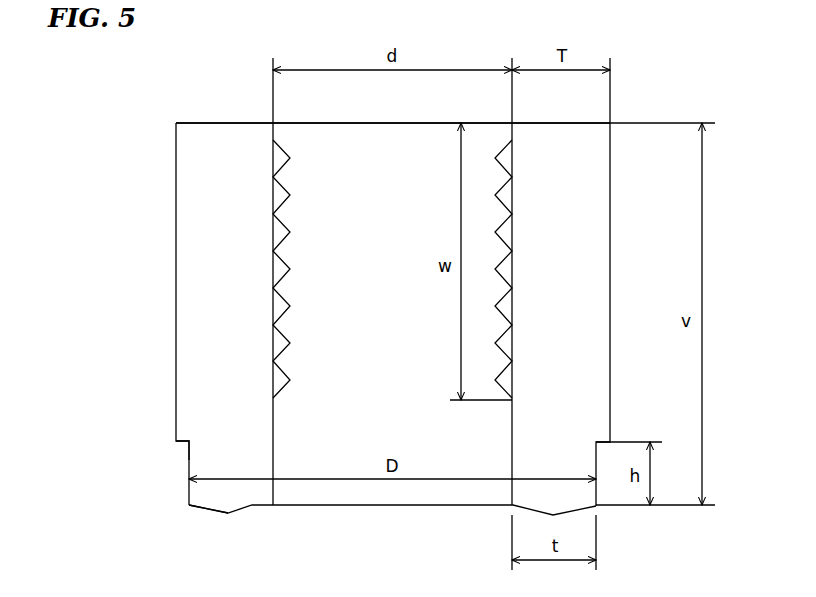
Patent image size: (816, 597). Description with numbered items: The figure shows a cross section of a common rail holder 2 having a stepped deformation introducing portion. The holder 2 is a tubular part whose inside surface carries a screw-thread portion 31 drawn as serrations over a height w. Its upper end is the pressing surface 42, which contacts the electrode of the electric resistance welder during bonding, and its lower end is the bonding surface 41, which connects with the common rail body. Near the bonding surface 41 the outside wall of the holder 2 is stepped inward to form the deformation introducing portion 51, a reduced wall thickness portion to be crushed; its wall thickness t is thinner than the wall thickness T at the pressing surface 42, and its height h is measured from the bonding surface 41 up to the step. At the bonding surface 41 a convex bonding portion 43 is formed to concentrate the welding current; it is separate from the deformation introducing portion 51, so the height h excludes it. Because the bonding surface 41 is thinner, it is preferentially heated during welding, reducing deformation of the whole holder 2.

The holder 2 is at (548, 296).
The screw-thread portion 31 is at (286, 267).
The bonding surface 41 is at (228, 513).
The pressing surface 42 is at (220, 123).
The convex bonding portion (groove portion) 43 is at (210, 514).
The deformation introducing portion (reduced wall thickness portion to be crushed) 51 is at (188, 458).